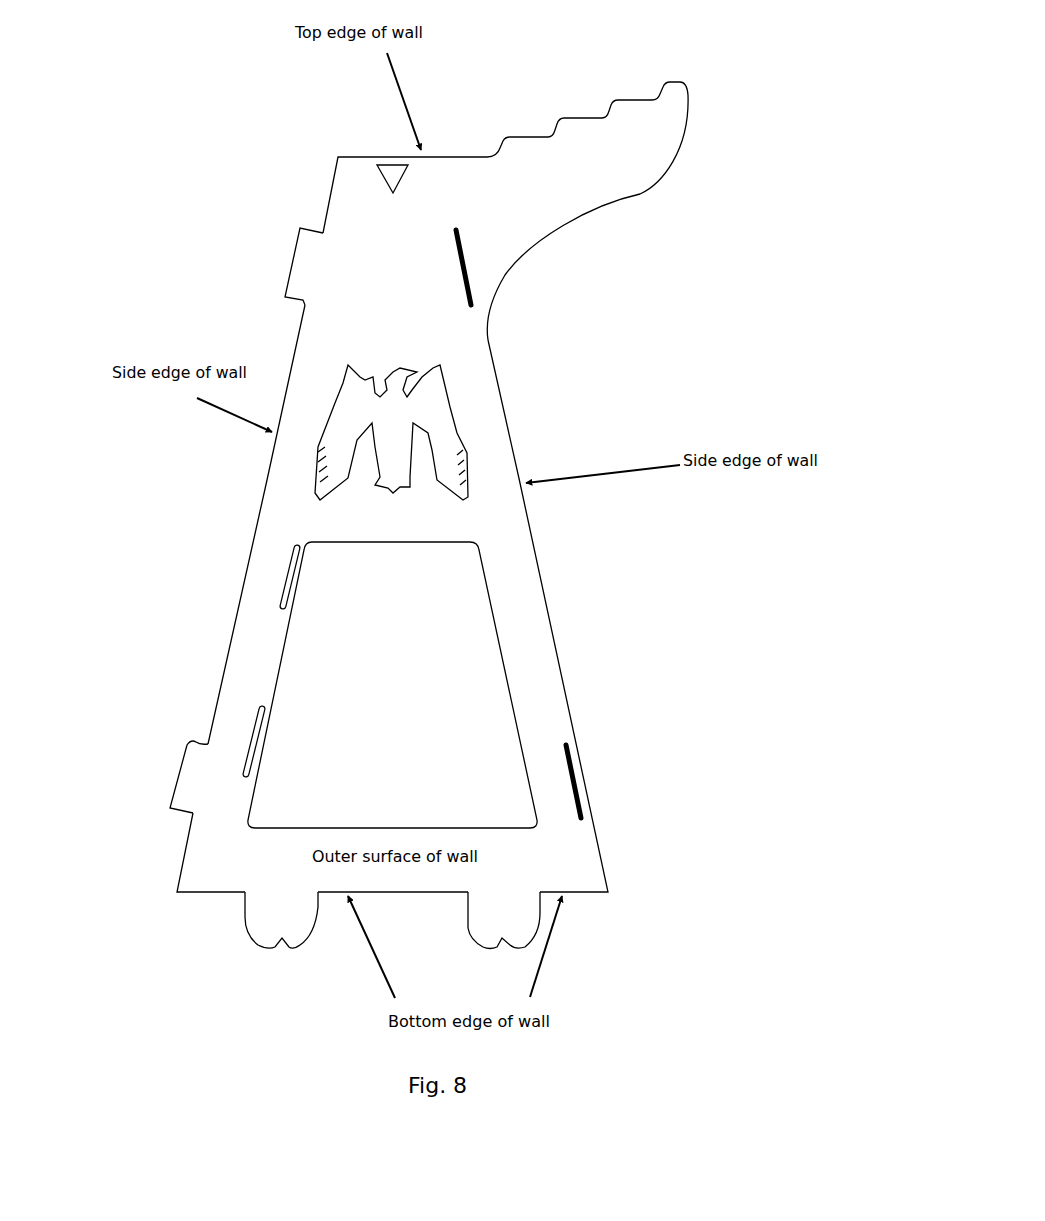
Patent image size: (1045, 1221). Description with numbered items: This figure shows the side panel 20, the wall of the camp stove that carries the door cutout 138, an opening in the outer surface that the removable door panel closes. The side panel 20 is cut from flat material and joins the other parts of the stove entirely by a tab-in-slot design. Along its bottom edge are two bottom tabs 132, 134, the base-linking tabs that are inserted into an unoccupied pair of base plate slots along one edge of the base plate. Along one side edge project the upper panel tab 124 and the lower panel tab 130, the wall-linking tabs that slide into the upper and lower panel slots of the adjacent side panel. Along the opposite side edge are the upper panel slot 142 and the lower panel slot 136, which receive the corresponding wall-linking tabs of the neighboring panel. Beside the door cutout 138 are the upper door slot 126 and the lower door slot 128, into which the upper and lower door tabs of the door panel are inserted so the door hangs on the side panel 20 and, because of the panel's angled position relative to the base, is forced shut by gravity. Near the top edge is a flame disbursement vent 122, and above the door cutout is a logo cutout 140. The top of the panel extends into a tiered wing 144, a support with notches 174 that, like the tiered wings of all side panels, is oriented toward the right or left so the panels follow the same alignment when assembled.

The side panel with door cutout 20 is at (195, 159).
The flame disbursement vent 122 is at (388, 176).
The upper panel tab 124 is at (297, 272).
The upper door slot 126 is at (288, 577).
The lower door slot 128 is at (253, 730).
The lower panel tab 130 is at (187, 775).
The bottom tab 132 is at (280, 917).
The bottom tab 134 is at (502, 908).
The lower panel slot 136 is at (578, 762).
The door cutout 138 is at (453, 640).
The logo cutout 140 is at (437, 403).
The upper panel slot 142 is at (467, 277).
The tiered wing 144 is at (622, 157).
The notches/tiers 174 is at (645, 91).